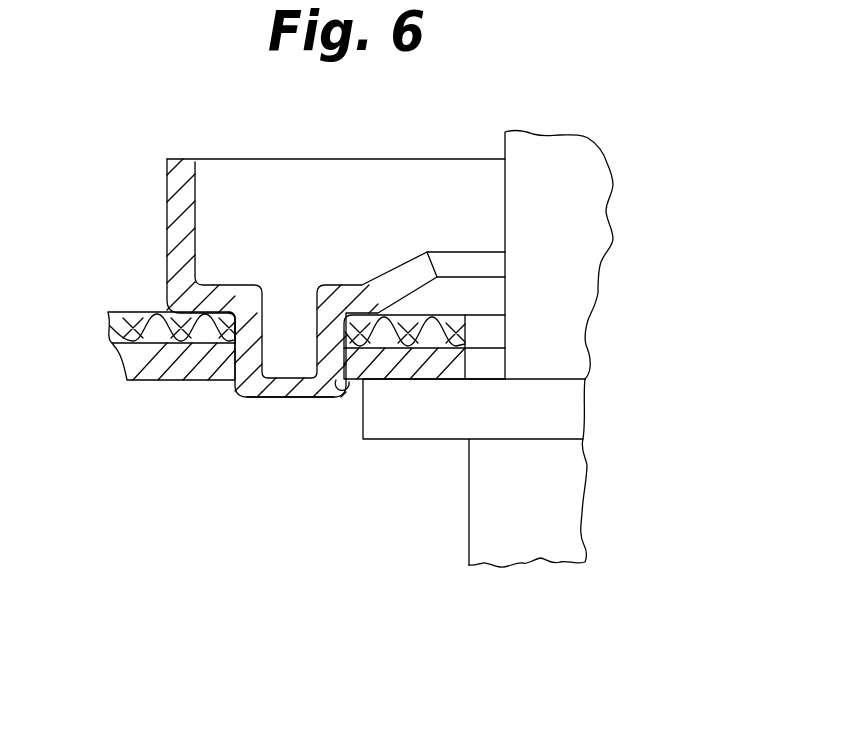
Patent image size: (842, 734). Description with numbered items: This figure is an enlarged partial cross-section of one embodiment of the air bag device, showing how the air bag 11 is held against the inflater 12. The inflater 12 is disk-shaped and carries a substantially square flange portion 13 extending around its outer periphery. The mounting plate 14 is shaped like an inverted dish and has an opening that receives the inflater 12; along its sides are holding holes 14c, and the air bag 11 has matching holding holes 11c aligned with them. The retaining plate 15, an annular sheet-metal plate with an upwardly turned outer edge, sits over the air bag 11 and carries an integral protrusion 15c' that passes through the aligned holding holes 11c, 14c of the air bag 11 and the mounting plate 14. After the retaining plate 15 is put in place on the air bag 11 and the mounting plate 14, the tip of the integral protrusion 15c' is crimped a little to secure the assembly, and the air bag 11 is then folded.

The air bag 11 is at (117, 328).
The holding hole 11c is at (237, 330).
The inflater 12 is at (577, 272).
The flange portion 13 is at (570, 403).
The mounting plate 14 is at (135, 365).
The holding hole 14c is at (333, 395).
The retaining plate 15 is at (175, 223).
The integral protrusion 15c' is at (286, 441).